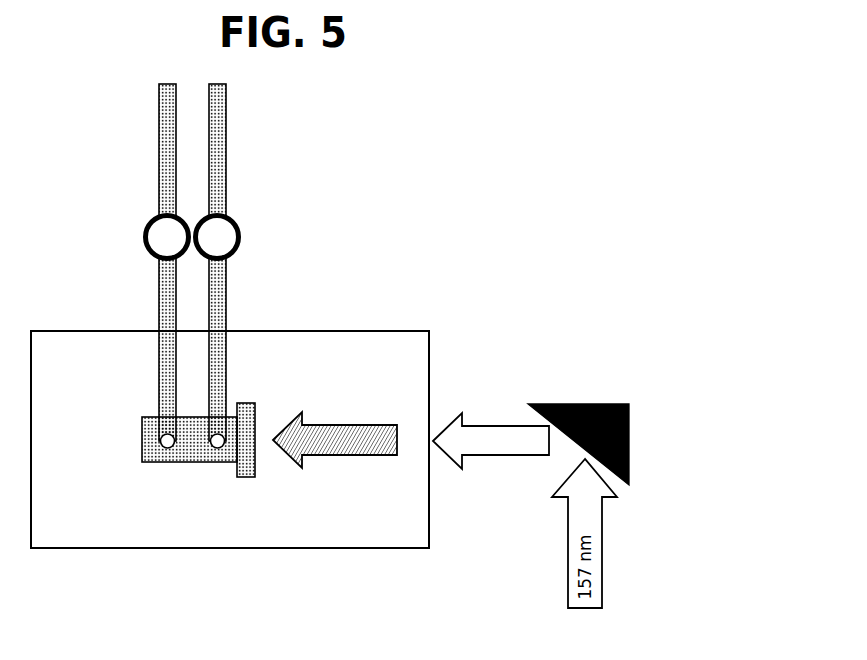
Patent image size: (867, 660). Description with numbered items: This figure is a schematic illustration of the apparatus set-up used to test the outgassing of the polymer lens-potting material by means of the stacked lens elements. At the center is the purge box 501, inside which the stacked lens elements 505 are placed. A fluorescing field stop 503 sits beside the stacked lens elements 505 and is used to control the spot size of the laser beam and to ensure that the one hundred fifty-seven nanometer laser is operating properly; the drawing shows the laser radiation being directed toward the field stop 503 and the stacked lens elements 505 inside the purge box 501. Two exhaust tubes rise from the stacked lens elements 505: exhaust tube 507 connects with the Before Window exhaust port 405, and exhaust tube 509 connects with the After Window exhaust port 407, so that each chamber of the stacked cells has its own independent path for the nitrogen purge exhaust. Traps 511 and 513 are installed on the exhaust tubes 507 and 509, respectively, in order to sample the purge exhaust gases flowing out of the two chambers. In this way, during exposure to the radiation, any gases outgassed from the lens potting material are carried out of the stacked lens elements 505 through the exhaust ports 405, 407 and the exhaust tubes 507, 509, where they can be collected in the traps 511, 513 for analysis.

The purge box 501 is at (402, 352).
The fluorescing field stop 503 is at (252, 458).
The stacked lens elements 505 is at (185, 456).
The exhaust tube 507 is at (226, 386).
The exhaust tube 509 is at (158, 386).
The trap 511 is at (222, 237).
The trap 513 is at (163, 239).
The gas exhaust port 405 is at (220, 443).
The gas exhaust port 407 is at (158, 443).